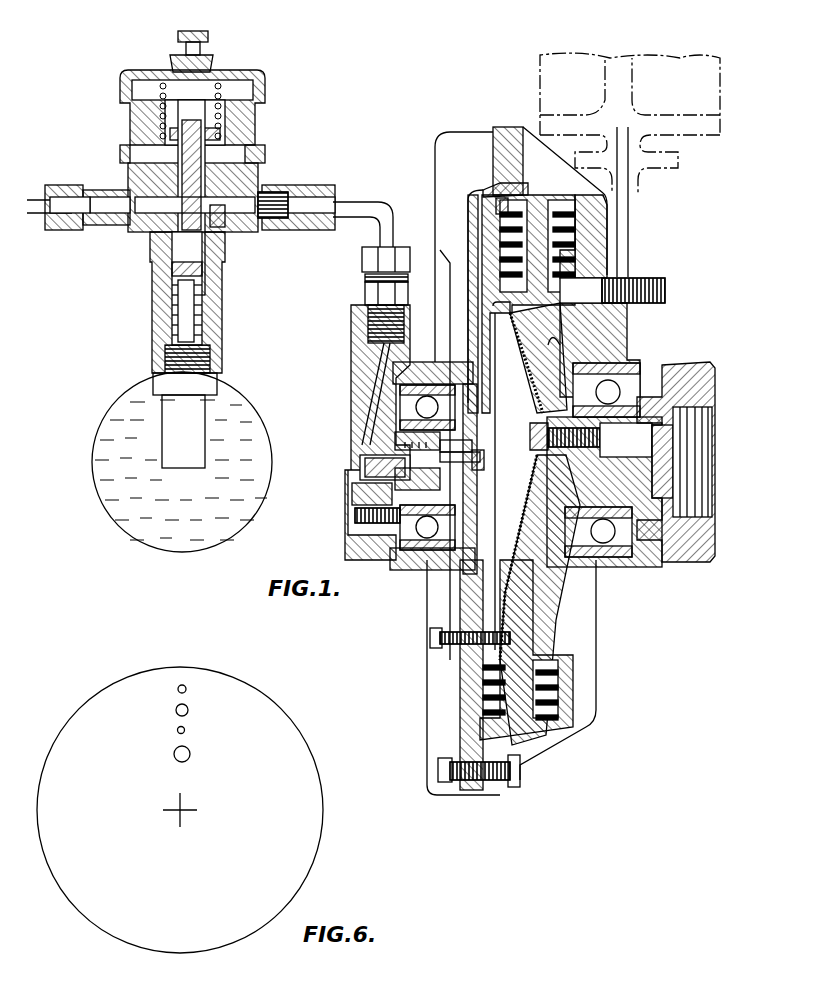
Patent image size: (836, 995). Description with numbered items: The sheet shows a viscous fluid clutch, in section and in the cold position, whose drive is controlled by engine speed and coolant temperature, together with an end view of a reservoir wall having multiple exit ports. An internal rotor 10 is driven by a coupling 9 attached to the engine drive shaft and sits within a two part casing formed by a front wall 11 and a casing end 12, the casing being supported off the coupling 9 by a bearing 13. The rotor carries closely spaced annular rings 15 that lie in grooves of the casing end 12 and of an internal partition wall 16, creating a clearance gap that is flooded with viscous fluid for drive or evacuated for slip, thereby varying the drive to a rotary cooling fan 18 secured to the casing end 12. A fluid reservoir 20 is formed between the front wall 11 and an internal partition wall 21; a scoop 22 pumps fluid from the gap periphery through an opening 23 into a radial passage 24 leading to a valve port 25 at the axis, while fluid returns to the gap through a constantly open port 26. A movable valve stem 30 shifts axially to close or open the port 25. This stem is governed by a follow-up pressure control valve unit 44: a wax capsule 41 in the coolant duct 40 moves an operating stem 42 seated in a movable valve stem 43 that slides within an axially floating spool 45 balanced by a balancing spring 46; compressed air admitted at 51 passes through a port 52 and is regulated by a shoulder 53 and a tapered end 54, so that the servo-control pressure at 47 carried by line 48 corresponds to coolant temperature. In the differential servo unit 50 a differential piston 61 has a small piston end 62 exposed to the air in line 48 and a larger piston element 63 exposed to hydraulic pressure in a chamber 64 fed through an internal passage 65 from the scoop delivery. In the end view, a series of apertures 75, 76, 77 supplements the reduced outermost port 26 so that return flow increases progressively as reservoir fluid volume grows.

In FIG. 1, the coupling 9 is at (680, 557).
In FIG. 1, the internal rotor 10 is at (598, 345).
In FIG. 1, the front wall 11 is at (500, 140).
In FIG. 1, the casing end 12 is at (610, 280).
In FIG. 1, the bearing 13 is at (632, 366).
In FIG. 1, the annular rings 15 is at (575, 222).
In FIG. 1, the internal partition wall 16 is at (495, 238).
In FIG. 1, the rotary cooling fan 18 is at (568, 75).
In FIG. 1, the fluid reservoir 20 is at (538, 596).
In FIG. 1, the internal partition wall 21 is at (530, 620).
In FIG. 6, the internal partition wall 21 is at (300, 822).
In FIG. 1, the scoop 22 is at (493, 198).
In FIG. 1, the opening 23 is at (496, 208).
In FIG. 1, the radial passage 24 is at (475, 282).
In FIG. 1, the valve port 25 is at (484, 462).
In FIG. 1, the constantly open port 26 is at (540, 348).
In FIG. 6, the constantly open port 26 is at (186, 689).
In FIG. 1, the valve stem 30 is at (470, 520).
In FIG. 1, the coolant duct 40 is at (92, 448).
In FIG. 1, the wax capsule 41 is at (195, 418).
In FIG. 1, the operating stem 42 is at (180, 324).
In FIG. 1, the movable valve stem 43 is at (202, 278).
In FIG. 1, the follow-up pressure control valve unit 44 is at (107, 82).
In FIG. 1, the axially floating spool 45 is at (224, 225).
In FIG. 1, the balancing spring 46 is at (200, 90).
In FIG. 1, the pneumatic servo-control pressure 47 is at (245, 172).
In FIG. 1, the line 48 is at (356, 207).
In FIG. 1, the differential servo unit 50 is at (318, 488).
In FIG. 1, the compressed air inlet 51 is at (42, 205).
In FIG. 1, the port 52 is at (165, 235).
In FIG. 1, the shoulder 53 is at (185, 192).
In FIG. 1, the tapered end 54 is at (190, 135).
In FIG. 1, the differential piston 61 is at (358, 490).
In FIG. 1, the small piston end 62 is at (360, 468).
In FIG. 1, the larger piston element 63 is at (378, 525).
In FIG. 1, the chamber 64 is at (465, 432).
In FIG. 1, the internal passage 65 is at (470, 446).
In FIG. 6, the aperture 75 is at (176, 708).
In FIG. 6, the aperture 76 is at (185, 730).
In FIG. 6, the aperture 77 is at (174, 755).